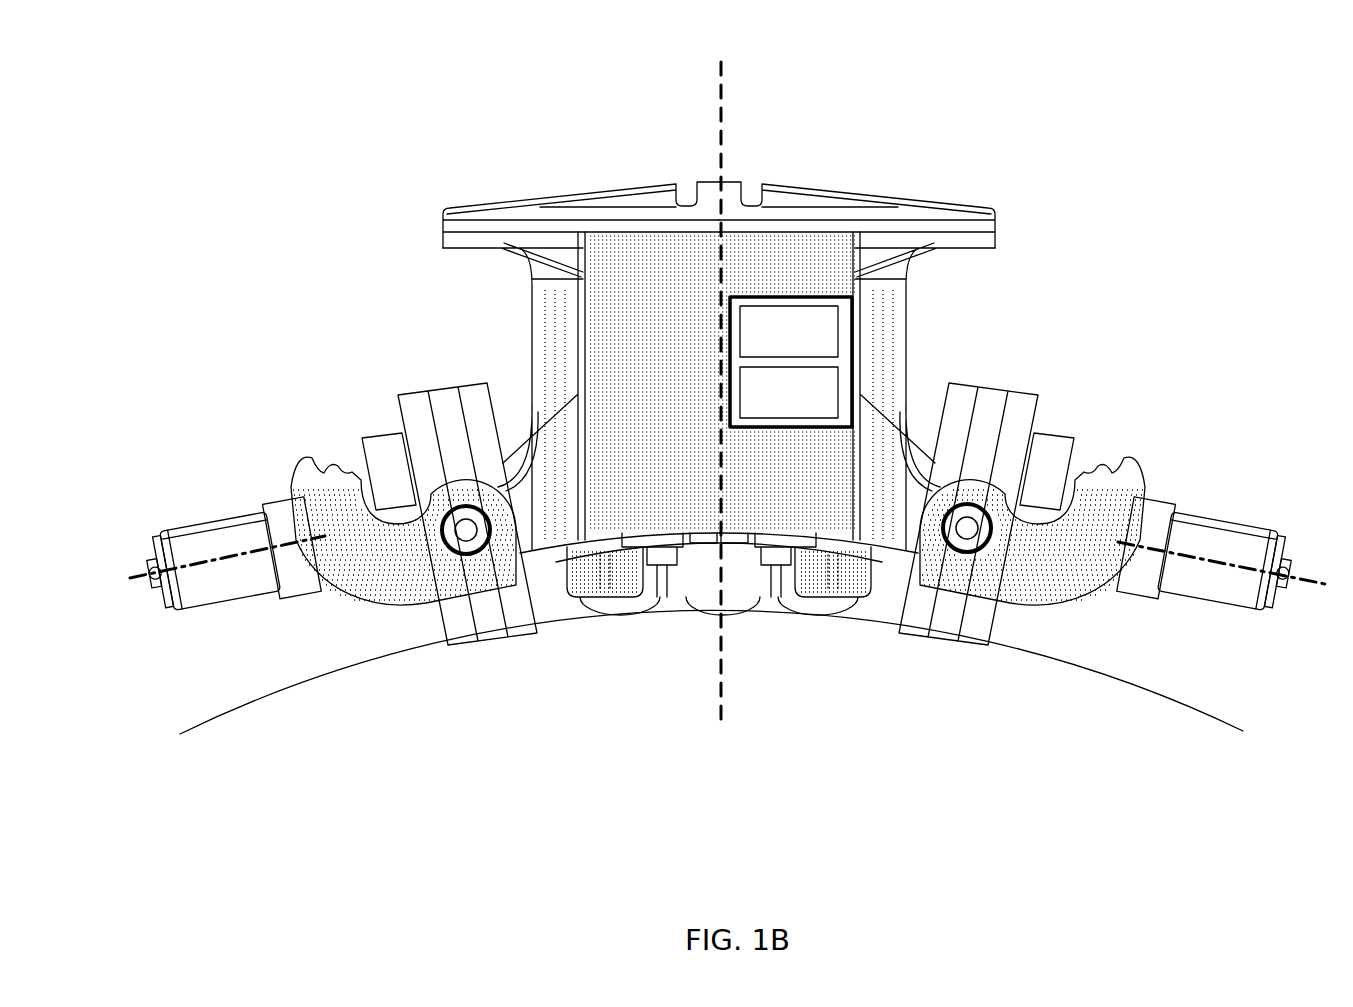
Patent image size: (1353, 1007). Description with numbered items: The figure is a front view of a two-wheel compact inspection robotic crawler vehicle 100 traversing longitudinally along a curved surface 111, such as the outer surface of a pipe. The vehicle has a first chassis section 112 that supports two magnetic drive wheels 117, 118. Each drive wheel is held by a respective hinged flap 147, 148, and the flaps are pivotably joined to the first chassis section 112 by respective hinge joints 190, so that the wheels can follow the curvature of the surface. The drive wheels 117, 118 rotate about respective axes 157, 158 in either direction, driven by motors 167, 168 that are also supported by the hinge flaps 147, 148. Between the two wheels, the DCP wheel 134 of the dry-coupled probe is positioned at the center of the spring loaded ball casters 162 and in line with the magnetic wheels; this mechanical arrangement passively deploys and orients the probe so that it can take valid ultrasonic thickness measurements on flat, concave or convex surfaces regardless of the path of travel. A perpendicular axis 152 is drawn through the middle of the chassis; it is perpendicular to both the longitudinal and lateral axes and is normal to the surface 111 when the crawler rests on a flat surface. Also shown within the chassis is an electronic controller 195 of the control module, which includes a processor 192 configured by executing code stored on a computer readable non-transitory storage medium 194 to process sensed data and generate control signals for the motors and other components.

The robotic crawler vehicle 100 is at (361, 118).
The curved surface 111 is at (244, 697).
The first chassis section 112 is at (671, 189).
The magnetic drive wheel 117 is at (452, 420).
The magnetic drive wheel 118 is at (997, 393).
The DCP wheel 134 is at (715, 580).
The hinged flap 147 is at (371, 562).
The hinged flap 148 is at (1087, 550).
The perpendicular axis 152 is at (725, 90).
The axis 157 is at (148, 575).
The axis 158 is at (1318, 585).
The spring loaded ball casters 162 is at (620, 606).
The motor 167 is at (233, 537).
The motor 168 is at (1200, 568).
The hinge joint 190 is at (473, 565).
The processor 192 is at (811, 347).
The computer readable non-transitory storage medium 194 is at (789, 392).
The electronic controller 195 is at (809, 270).